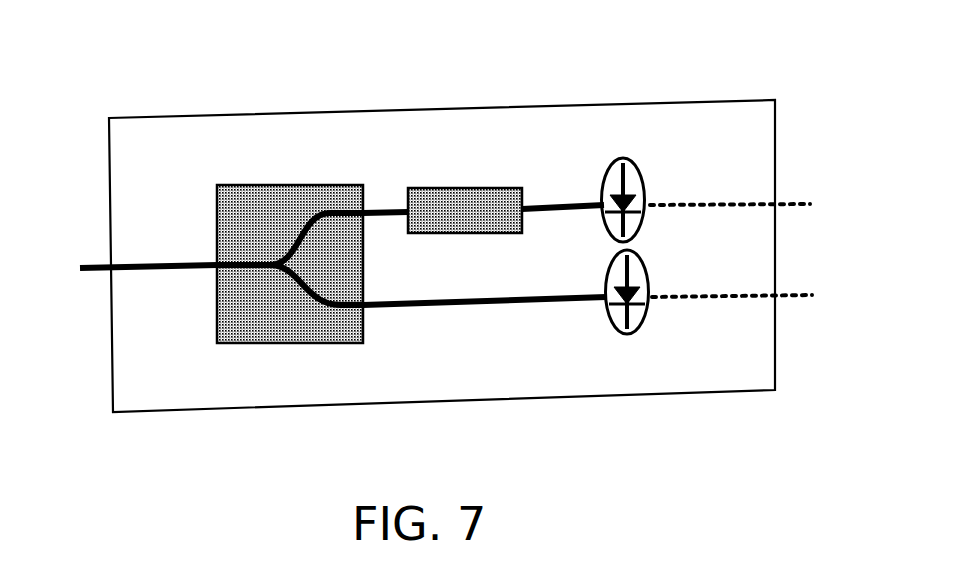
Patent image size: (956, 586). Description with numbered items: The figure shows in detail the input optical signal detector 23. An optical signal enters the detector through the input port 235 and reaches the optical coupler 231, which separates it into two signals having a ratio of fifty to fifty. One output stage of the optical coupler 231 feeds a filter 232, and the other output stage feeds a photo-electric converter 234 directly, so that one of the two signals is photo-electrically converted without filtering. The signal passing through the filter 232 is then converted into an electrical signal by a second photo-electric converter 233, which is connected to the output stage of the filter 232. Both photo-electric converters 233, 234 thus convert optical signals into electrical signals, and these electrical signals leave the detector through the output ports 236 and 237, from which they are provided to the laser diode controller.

The input optical signal detector 23 is at (698, 100).
The optical coupler 231 is at (218, 300).
The filter 232 is at (450, 188).
The photo-electric converter 233 is at (644, 178).
The photo-electric converter 234 is at (648, 270).
The input port 235 is at (95, 262).
The output port 236 is at (798, 200).
The output port 237 is at (800, 292).